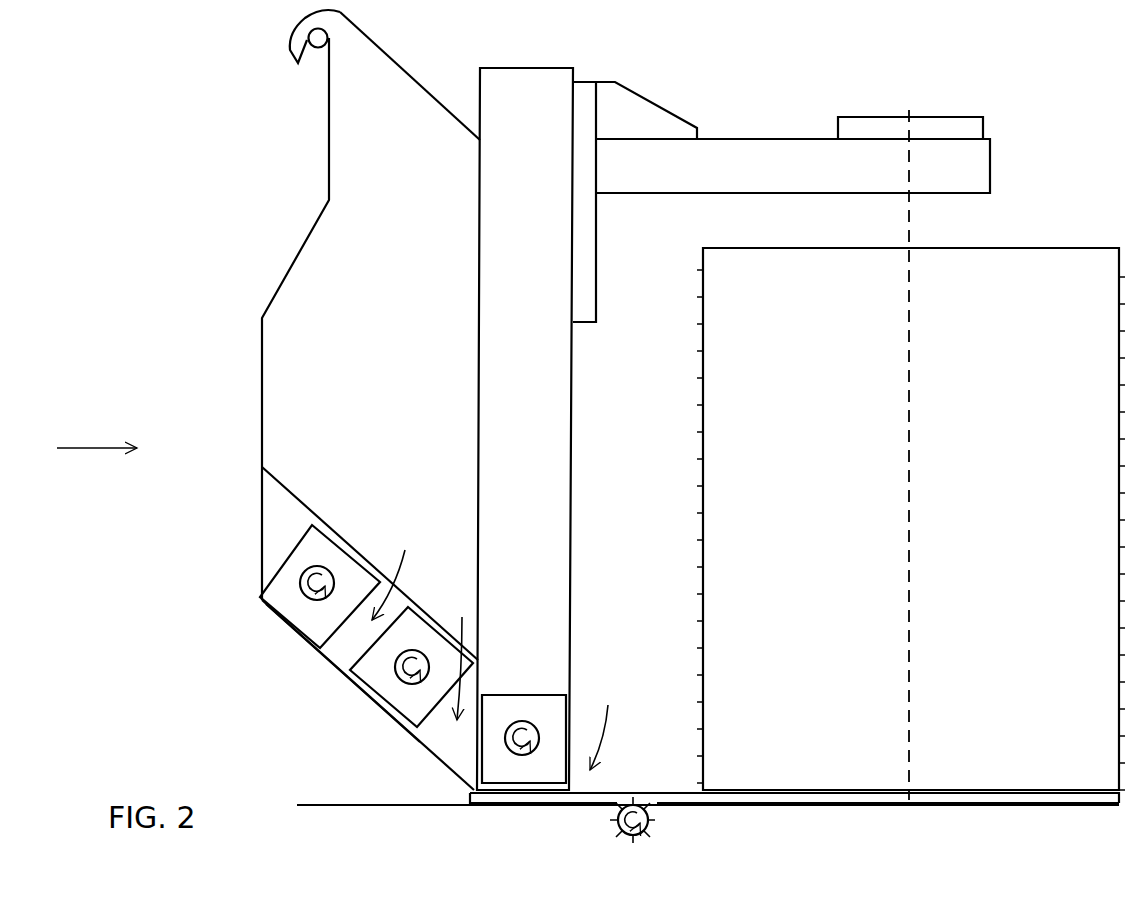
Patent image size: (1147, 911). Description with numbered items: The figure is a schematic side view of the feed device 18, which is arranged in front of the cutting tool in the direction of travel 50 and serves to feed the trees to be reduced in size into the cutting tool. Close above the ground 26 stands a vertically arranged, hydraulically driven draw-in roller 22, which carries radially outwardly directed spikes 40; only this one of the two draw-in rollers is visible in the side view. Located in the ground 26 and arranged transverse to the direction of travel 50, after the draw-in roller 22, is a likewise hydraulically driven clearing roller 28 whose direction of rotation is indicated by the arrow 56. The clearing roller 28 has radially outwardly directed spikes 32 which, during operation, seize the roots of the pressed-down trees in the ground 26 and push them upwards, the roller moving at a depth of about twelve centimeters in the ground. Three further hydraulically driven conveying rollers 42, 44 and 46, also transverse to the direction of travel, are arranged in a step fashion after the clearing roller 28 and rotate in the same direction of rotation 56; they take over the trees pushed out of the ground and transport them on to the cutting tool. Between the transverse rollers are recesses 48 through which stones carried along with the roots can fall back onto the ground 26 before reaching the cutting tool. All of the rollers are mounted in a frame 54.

The feed device 18 is at (127, 158).
The draw-in roller 22 is at (1040, 273).
The ground 26 is at (315, 810).
The clearing roller 28 is at (618, 832).
The spikes 32 is at (640, 835).
The spikes 40 is at (702, 458).
The conveying roller 42 is at (512, 755).
The conveying roller 44 is at (403, 677).
The conveying roller 46 is at (312, 600).
The recesses 48 is at (499, 646).
The direction of travel 50 is at (82, 447).
The frame 54 is at (748, 160).
The direction of rotation 56 is at (650, 825).